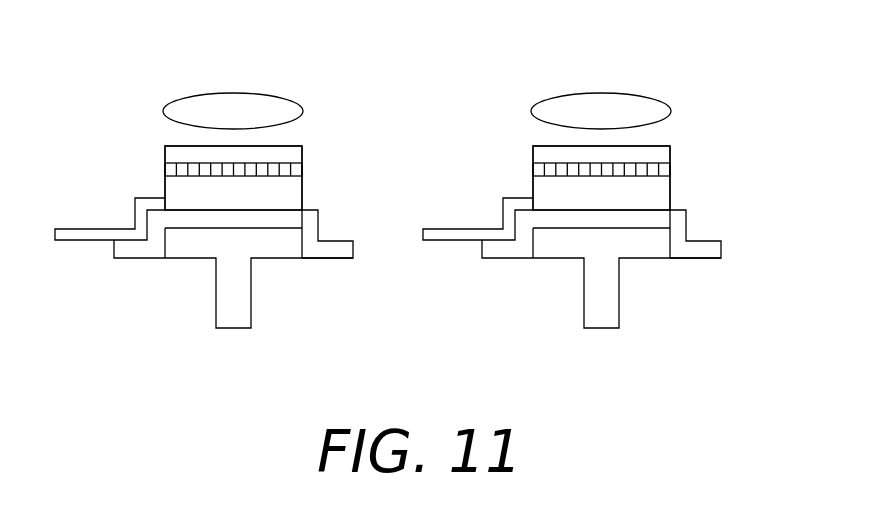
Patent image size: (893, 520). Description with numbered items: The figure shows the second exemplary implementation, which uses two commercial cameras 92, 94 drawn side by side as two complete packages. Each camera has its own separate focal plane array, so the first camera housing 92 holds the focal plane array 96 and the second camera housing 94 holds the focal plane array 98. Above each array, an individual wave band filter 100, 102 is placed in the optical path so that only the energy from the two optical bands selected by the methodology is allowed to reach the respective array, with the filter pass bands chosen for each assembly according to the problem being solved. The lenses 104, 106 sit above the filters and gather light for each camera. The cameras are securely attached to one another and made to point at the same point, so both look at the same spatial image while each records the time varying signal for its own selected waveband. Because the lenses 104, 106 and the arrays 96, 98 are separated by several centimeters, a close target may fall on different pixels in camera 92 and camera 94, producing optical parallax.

The commercial camera 92 is at (127, 105).
The commercial camera 94 is at (707, 88).
The focal plane array 96 is at (165, 170).
The focal plane array 98 is at (533, 170).
The wave band filter 100 is at (303, 156).
The wave band filter 102 is at (671, 156).
The lens 104 is at (303, 111).
The lens 106 is at (533, 112).